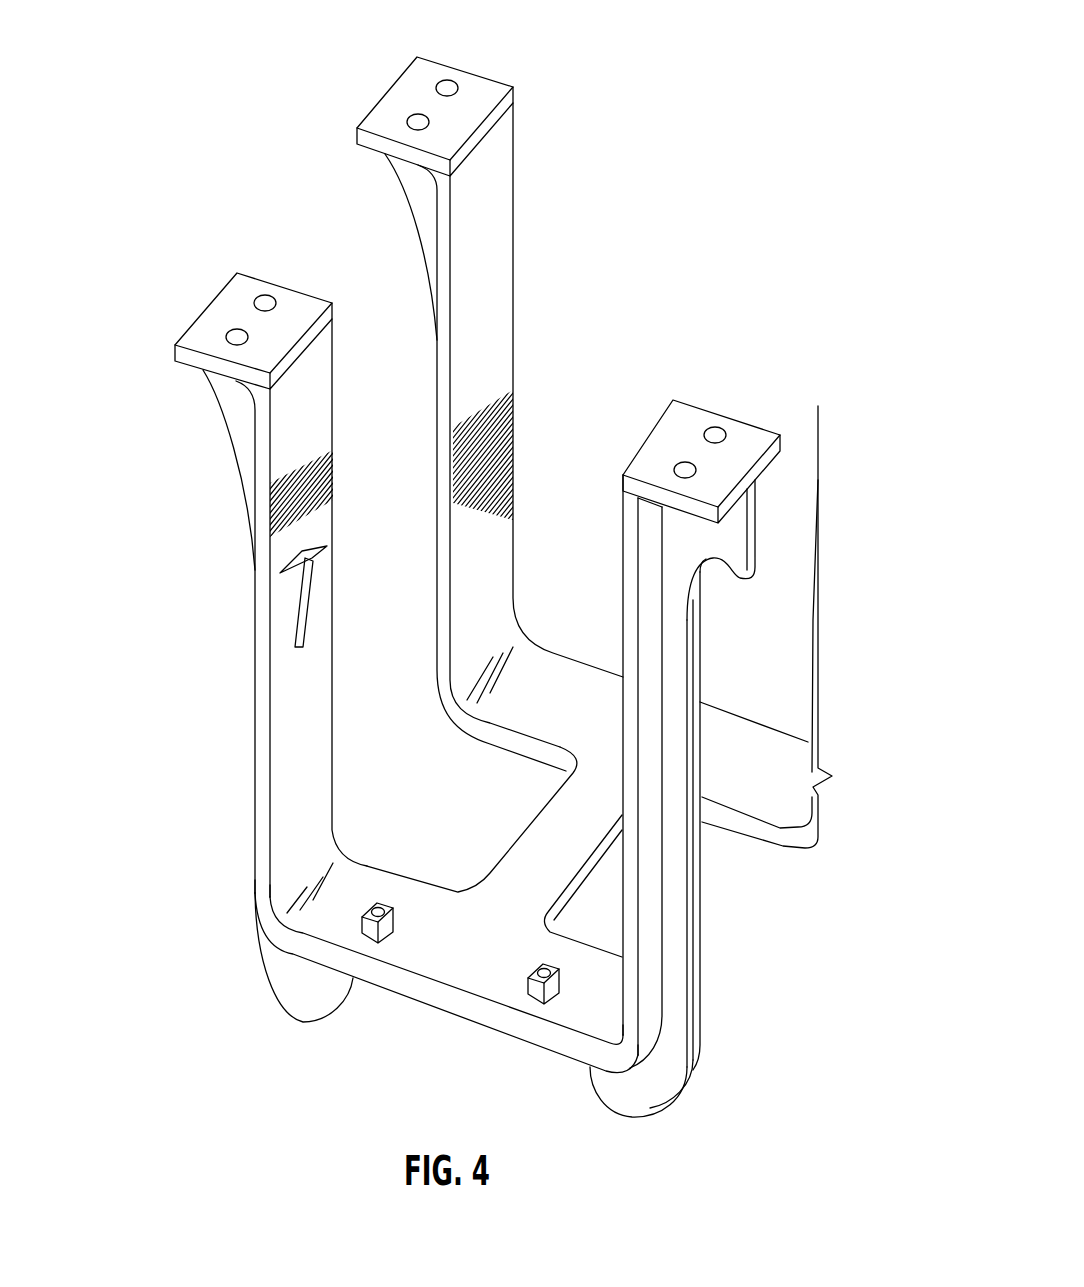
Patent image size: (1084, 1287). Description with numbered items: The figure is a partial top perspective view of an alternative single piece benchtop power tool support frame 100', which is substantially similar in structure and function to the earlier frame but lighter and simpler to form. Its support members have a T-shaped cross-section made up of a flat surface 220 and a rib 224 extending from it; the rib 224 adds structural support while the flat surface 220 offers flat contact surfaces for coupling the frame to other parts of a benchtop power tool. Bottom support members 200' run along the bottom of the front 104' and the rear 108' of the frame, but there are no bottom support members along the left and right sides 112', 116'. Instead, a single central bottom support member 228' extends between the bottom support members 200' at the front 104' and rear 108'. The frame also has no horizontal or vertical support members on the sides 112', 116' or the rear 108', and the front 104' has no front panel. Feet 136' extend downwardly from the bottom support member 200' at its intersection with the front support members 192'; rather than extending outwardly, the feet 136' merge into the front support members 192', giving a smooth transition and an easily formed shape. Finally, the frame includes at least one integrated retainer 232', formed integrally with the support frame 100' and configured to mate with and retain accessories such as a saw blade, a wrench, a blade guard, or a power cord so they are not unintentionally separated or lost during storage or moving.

The support frame 100' is at (500, 607).
The front 104' is at (237, 616).
The rear 108' is at (623, 659).
The left side 112' is at (490, 437).
The right side 116' is at (813, 627).
The feet 136' is at (474, 1025).
The front support members 192' is at (471, 934).
The bottom support member 200' is at (446, 818).
The flat surface 220 is at (300, 293).
The rib 224 is at (240, 407).
The central bottom support member 228' is at (472, 819).
The integrated retainer 232' is at (404, 775).